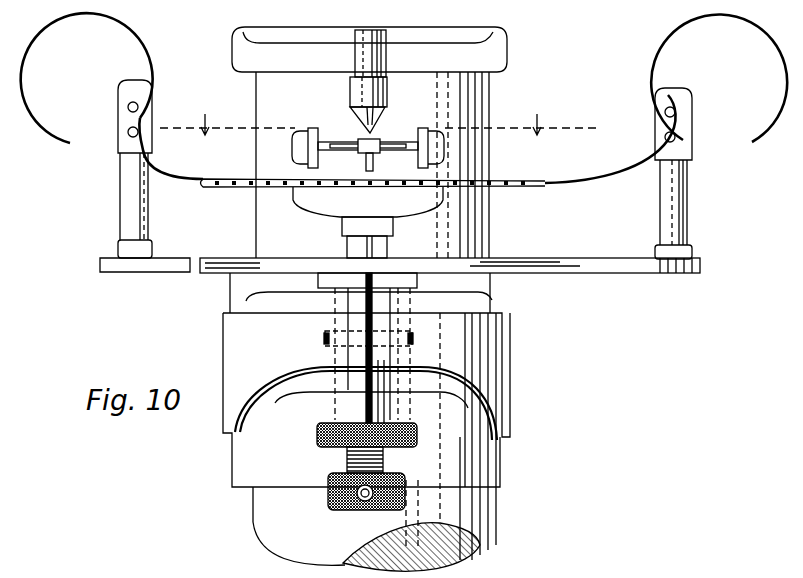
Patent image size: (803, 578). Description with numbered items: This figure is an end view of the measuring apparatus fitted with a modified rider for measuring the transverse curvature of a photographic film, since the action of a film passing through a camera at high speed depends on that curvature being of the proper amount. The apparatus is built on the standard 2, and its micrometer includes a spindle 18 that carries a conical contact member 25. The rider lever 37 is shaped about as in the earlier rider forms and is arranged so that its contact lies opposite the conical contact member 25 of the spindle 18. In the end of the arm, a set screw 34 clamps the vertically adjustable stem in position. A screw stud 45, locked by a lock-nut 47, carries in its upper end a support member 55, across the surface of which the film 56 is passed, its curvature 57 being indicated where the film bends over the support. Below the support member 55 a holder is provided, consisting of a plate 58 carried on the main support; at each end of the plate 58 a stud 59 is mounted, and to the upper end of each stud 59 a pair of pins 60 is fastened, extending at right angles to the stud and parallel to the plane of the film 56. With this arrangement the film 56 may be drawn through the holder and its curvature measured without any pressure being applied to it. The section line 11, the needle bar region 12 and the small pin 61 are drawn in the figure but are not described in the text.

The standard 2 is at (481, 538).
The section line 11- 11 is at (380, 130).
The needle bar 12 is at (382, 22).
The spindle 18 is at (384, 58).
The conical contact member 25 is at (378, 124).
The set screw 34 is at (325, 340).
The rider lever 37 is at (346, 140).
The screw stud 45 is at (347, 464).
The lock-nut 47 is at (317, 437).
The support member 55 is at (398, 204).
The film 56 is at (597, 189).
The curvature 57 is at (280, 168).
The plate 58 is at (596, 274).
The stud 59 is at (688, 226).
The pins 60 is at (127, 132).
The pin 61 is at (368, 160).